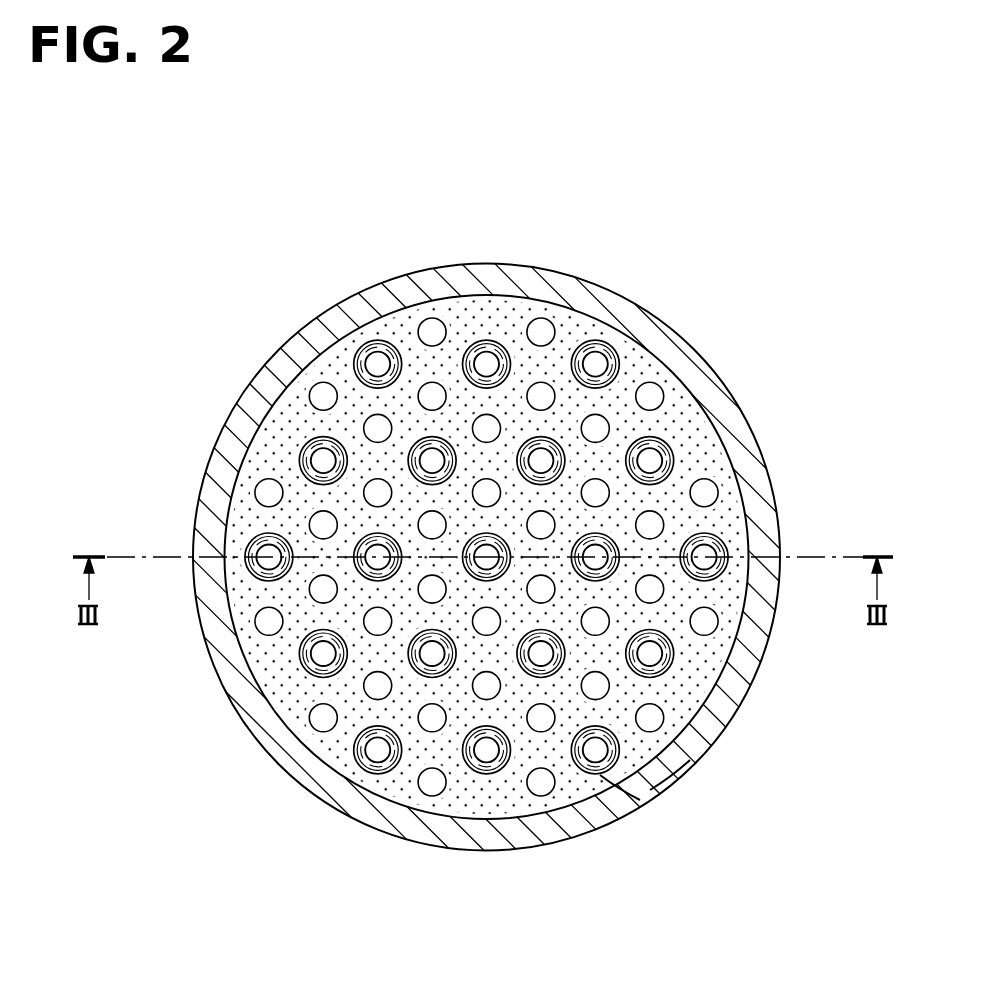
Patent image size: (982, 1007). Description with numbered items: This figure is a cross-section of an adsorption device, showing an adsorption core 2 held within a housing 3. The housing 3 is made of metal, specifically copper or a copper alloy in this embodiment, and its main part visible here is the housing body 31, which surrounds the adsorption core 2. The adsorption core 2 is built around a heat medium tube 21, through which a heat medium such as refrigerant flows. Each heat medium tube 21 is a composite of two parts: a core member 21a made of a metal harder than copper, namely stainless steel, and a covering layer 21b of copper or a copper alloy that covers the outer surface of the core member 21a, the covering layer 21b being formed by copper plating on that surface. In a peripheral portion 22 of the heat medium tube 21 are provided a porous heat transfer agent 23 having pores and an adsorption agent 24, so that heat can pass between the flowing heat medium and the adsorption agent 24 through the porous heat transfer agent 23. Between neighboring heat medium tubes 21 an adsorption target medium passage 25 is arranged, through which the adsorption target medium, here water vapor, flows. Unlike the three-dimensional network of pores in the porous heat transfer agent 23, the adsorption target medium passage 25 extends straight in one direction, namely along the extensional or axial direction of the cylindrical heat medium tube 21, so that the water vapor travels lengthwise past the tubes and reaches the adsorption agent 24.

The adsorption core 2 is at (515, 562).
The housing 3 is at (519, 557).
The housing body 31 is at (720, 403).
The heat medium tube 21 is at (470, 535).
The core member 21a is at (357, 763).
The covering layer 21b is at (366, 776).
The peripheral portion 22 is at (680, 698).
The porous heat transfer agent 23 is at (625, 767).
The adsorption agent 24 is at (643, 740).
The adsorption target medium passage 25 is at (601, 482).